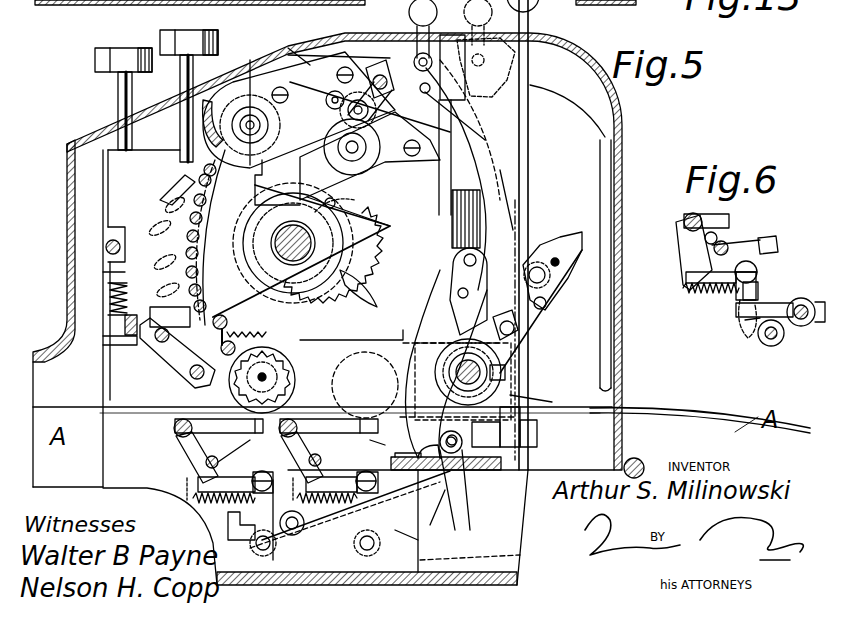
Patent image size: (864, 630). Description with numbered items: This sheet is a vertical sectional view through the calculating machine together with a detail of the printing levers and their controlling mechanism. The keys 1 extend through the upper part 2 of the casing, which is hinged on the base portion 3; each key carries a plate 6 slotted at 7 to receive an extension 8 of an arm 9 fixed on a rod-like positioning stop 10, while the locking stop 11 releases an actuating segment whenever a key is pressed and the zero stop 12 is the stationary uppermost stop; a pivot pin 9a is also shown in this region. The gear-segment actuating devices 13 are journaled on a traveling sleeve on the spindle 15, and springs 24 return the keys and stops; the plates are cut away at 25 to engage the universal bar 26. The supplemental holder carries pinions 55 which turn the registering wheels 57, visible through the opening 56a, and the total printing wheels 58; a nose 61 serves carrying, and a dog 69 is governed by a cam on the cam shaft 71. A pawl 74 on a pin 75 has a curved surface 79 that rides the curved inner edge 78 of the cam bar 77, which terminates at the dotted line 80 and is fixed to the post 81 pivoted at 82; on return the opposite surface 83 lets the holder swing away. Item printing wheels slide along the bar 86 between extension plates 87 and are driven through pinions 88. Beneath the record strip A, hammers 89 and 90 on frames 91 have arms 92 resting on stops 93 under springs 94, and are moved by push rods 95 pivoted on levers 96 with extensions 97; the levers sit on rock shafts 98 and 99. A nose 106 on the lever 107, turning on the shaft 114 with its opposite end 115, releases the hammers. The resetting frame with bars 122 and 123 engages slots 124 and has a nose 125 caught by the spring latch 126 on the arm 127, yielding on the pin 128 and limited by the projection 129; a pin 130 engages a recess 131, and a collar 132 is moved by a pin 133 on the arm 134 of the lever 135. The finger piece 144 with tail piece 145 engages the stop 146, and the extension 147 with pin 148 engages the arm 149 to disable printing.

In FIG. 5, the keys 1 is at (118, 65).
In FIG. 5, the upper part of the casing 2 is at (622, 135).
In FIG. 5, the base portion 3 is at (488, 515).
In FIG. 5, the key plate 6 is at (160, 200).
In FIG. 5, the slot 7 is at (172, 190).
In FIG. 5, the extension 8 is at (162, 325).
In FIG. 5, the arm 9 is at (205, 172).
In FIG. 5, the pivot pin 9a is at (248, 106).
In FIG. 5, the positioning stop 10 is at (170, 195).
In FIG. 5, the locking stop 11 is at (200, 355).
In FIG. 5, the zero stop 12 is at (212, 205).
In FIG. 5, the actuating segments 13 is at (365, 162).
In FIG. 5, the spindle 15 is at (272, 243).
In FIG. 5, the springs 24 is at (112, 308).
In FIG. 5, the cutaway 25 is at (158, 243).
In FIG. 5, the universal bar 26 is at (128, 226).
In FIG. 5, the pinions 55 is at (501, 200).
In FIG. 5, the opening 56a is at (345, 35).
In FIG. 5, the registering wheels 57 is at (293, 41).
In FIG. 5, the total printing wheels 58 is at (365, 385).
In FIG. 5, the nose 61 is at (262, 45).
In FIG. 5, the dog 69 is at (235, 85).
In FIG. 5, the cam shaft 71 is at (260, 120).
In FIG. 5, the pawl 74 is at (255, 105).
In FIG. 5, the pin 75 is at (338, 150).
In FIG. 5, the cam bar 77 is at (497, 165).
In FIG. 5, the curved inner edge 78 is at (450, 222).
In FIG. 5, the curved surface 79 is at (365, 87).
In FIG. 5, the dotted line 80 is at (440, 318).
In FIG. 5, the post 81 is at (488, 262).
In FIG. 5, the pivot 82 is at (453, 470).
In FIG. 5, the opposite surface 83 is at (457, 119).
In FIG. 5, the bar 86 is at (258, 378).
In FIG. 5, the extension plates 87 is at (382, 302).
In FIG. 5, the pinions 88 is at (290, 360).
In FIG. 5, the hammers 89 is at (381, 450).
In FIG. 5, the hammers 90 is at (239, 450).
In FIG. 6, the hammers 90 is at (782, 244).
In FIG. 5, the frames 91 is at (175, 425).
In FIG. 6, the frames 91 is at (722, 210).
In FIG. 5, the arm 92 is at (190, 450).
In FIG. 6, the arm 92 is at (682, 252).
In FIG. 5, the stop 93 is at (273, 454).
In FIG. 6, the stop 93 is at (725, 240).
In FIG. 5, the spring 94 is at (225, 500).
In FIG. 6, the spring 94 is at (692, 293).
In FIG. 5, the push rods 95 is at (198, 480).
In FIG. 6, the push rods 95 is at (760, 267).
In FIG. 5, the levers 96 is at (380, 490).
In FIG. 6, the levers 96 is at (758, 290).
In FIG. 5, the extensions 97 is at (380, 505).
In FIG. 6, the extensions 97 is at (740, 306).
In FIG. 5, the rock shaft 98 is at (264, 550).
In FIG. 6, the rock shaft 98 is at (768, 346).
In FIG. 5, the rock shaft 99 is at (367, 550).
In FIG. 5, the nose 106 is at (250, 530).
In FIG. 6, the nose 106 is at (738, 325).
In FIG. 5, the lever 107 is at (256, 545).
In FIG. 6, the lever 107 is at (750, 335).
In FIG. 5, the shaft 114 is at (300, 555).
In FIG. 6, the shaft 114 is at (803, 326).
In FIG. 5, the opposite end 115 is at (322, 555).
In FIG. 5, the longitudinal bar 122 is at (270, 255).
In FIG. 5, the longitudinal bar 123 is at (355, 197).
In FIG. 5, the slots 124 is at (355, 270).
In FIG. 5, the nose 125 is at (395, 228).
In FIG. 5, the spring latch 126 is at (575, 235).
In FIG. 5, the arm 127 is at (518, 325).
In FIG. 5, the pin 128 is at (530, 215).
In FIG. 5, the projection 129 is at (570, 305).
In FIG. 5, the pin 130 is at (514, 335).
In FIG. 5, the recess 131 is at (490, 372).
In FIG. 5, the collar 132 is at (520, 275).
In FIG. 5, the pin 133 is at (505, 380).
In FIG. 5, the arm 134 is at (625, 390).
In FIG. 5, the lever 135 is at (537, 440).
In FIG. 5, the finger piece 144 is at (412, 16).
In FIG. 5, the tail piece 145 is at (475, 112).
In FIG. 5, the stop 146 is at (480, 95).
In FIG. 5, the extension 147 is at (449, 521).
In FIG. 5, the pin 148 is at (470, 563).
In FIG. 5, the arm 149 is at (408, 545).